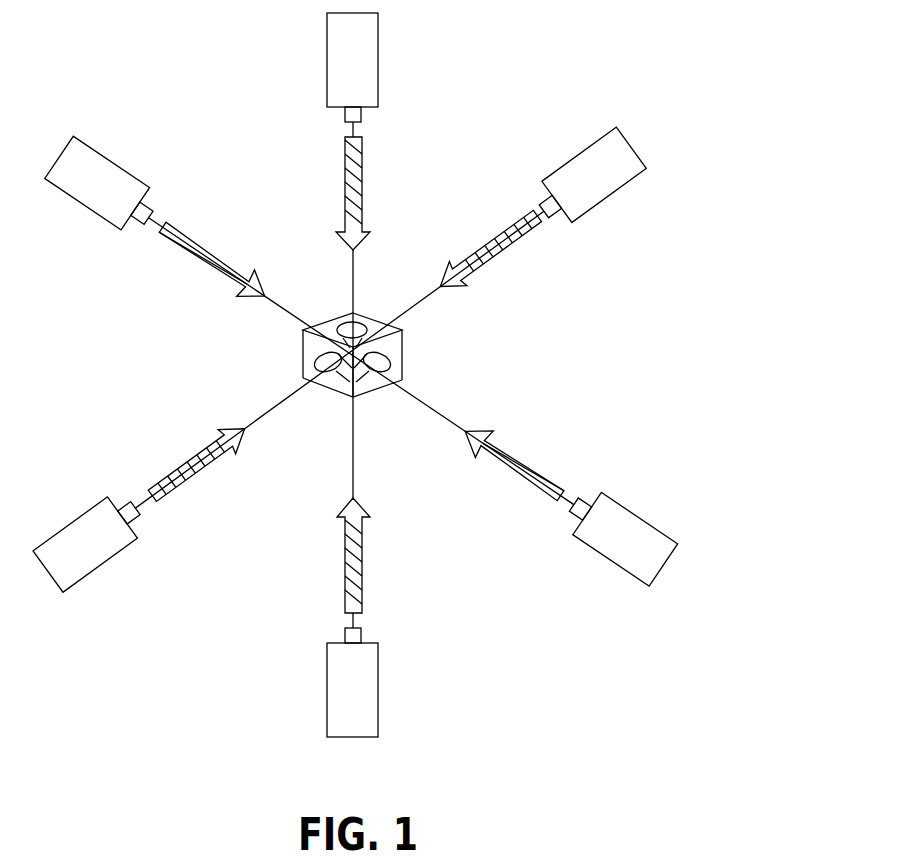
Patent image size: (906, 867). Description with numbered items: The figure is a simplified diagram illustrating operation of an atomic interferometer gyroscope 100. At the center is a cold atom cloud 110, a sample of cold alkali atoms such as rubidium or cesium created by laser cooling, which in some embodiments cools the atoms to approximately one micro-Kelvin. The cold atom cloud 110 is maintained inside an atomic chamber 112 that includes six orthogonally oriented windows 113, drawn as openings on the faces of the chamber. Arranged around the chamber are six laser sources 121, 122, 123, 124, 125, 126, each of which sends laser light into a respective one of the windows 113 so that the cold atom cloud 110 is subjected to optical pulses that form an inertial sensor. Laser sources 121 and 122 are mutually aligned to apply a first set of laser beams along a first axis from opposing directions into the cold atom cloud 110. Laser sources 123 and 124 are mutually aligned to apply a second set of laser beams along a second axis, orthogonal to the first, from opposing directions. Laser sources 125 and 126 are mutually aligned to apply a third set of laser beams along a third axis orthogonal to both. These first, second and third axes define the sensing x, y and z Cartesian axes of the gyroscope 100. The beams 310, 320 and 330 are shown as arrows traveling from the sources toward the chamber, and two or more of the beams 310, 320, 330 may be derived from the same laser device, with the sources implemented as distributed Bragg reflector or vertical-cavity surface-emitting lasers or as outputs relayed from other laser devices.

The atomic interferometer gyroscope 100 is at (742, 206).
The cold atom cloud 110 is at (303, 345).
The atomic chamber 112 is at (402, 370).
The windows 113 is at (348, 317).
The laser source 121 is at (120, 170).
The laser source 122 is at (630, 510).
The laser source 123 is at (325, 82).
The laser source 124 is at (378, 705).
The laser source 125 is at (63, 523).
The laser source 126 is at (563, 163).
The laser beam 310 is at (213, 257).
The laser beam 320 is at (343, 203).
The laser beam 330 is at (170, 468).